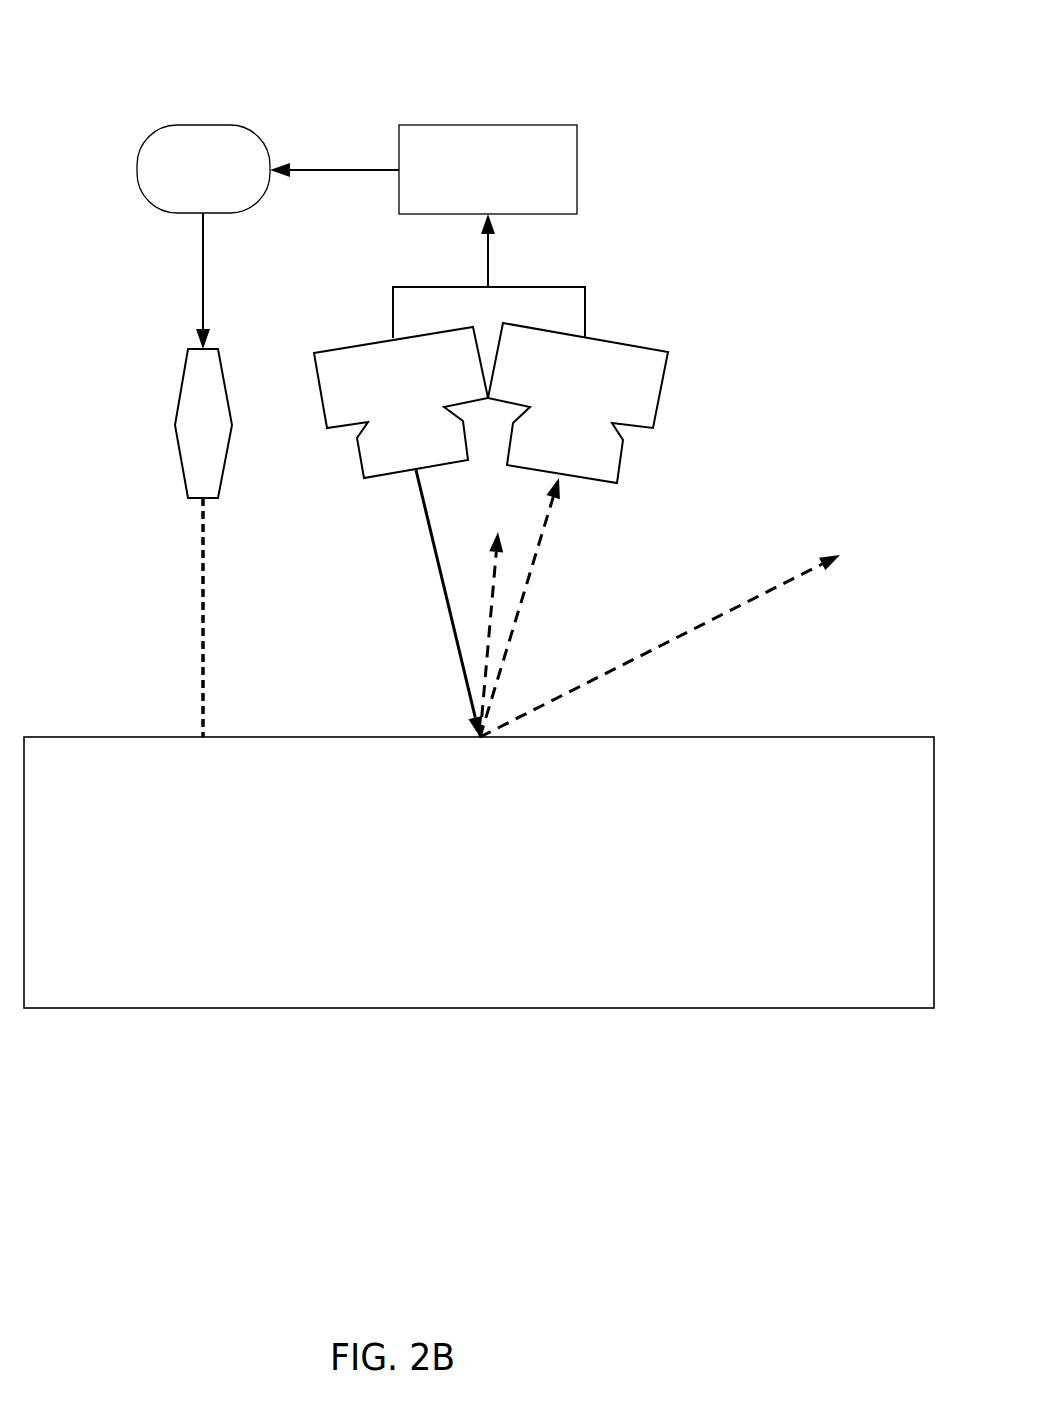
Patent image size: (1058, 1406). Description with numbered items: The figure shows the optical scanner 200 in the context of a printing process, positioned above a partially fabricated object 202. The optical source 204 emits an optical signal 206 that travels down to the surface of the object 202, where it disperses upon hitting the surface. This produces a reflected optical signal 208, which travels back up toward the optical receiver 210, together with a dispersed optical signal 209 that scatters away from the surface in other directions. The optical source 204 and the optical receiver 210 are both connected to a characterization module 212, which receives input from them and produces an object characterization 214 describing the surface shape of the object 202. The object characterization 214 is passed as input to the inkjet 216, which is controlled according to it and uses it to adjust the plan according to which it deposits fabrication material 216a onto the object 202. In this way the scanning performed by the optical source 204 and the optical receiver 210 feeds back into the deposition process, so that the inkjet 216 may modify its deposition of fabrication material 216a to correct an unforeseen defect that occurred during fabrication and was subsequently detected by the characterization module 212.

The optical scanner 200 is at (100, 28).
The partially fabricated object 202 is at (480, 1009).
The optical source 204 is at (390, 338).
The optical signal 206 is at (440, 596).
The reflected optical signal 208 is at (527, 585).
The dispersed optical signal 209 is at (493, 602).
The optical receiver 210 is at (590, 335).
The characterization module 212 is at (508, 186).
The object characterization 214 is at (223, 186).
The inkjet 216 is at (175, 425).
The fabrication material 216a is at (200, 613).